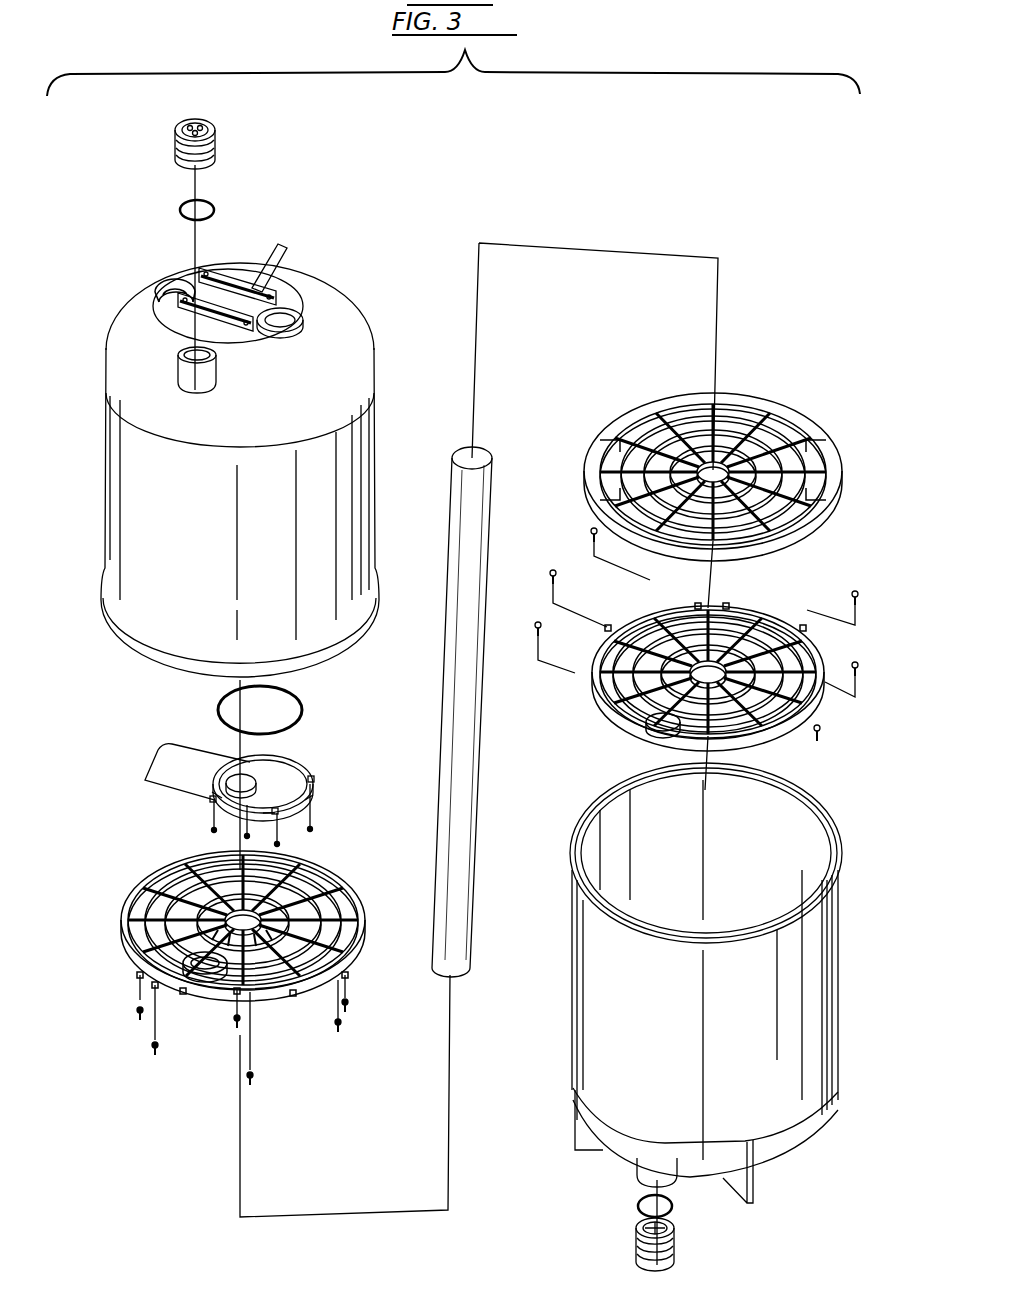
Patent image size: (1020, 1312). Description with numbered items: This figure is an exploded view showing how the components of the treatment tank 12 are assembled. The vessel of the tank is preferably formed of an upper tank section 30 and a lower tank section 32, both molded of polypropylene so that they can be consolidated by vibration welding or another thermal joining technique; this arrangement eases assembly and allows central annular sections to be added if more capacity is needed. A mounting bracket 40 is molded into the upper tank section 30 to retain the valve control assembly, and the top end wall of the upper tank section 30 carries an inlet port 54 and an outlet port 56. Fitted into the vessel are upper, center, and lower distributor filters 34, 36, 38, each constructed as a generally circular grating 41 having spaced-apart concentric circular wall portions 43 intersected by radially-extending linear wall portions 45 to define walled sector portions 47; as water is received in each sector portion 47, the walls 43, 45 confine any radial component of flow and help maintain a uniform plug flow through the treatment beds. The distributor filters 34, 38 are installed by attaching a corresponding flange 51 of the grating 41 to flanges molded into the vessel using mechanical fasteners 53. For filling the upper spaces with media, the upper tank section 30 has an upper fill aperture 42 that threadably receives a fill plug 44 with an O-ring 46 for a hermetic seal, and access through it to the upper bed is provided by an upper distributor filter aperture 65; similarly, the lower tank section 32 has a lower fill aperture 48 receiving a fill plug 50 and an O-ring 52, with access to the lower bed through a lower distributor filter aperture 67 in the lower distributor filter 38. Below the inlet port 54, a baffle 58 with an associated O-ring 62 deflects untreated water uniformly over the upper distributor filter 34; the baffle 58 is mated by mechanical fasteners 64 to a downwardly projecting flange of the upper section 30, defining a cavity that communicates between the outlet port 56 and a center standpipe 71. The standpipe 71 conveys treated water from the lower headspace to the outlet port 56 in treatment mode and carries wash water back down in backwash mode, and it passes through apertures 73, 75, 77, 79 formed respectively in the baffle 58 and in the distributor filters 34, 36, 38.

The treatment tank 12 is at (756, 241).
The upper tank section 30 is at (118, 485).
The lower tank section 32 is at (836, 960).
The upper distributor filter 34 is at (153, 876).
The center distributor filter 36 is at (805, 412).
The lower distributor filter 38 is at (778, 614).
The mounting bracket 40 is at (290, 275).
The grating 41 is at (310, 866).
The upper fill aperture 42 is at (180, 357).
The circular wall portion 43 is at (122, 936).
The fill plug 44 is at (216, 130).
The linear wall portion 45 is at (130, 909).
The O-ring 46 is at (212, 205).
The sector portion 47 is at (135, 962).
The lower fill aperture 48 is at (640, 1185).
The fill plug 50 is at (680, 1246).
The flange 51 is at (355, 931).
The O-ring 52 is at (673, 1206).
The mechanical fastener 53 is at (146, 1045).
The inlet port 54 is at (162, 283).
The outlet port 56 is at (300, 316).
The baffle 58 is at (313, 787).
The O-ring 62 is at (303, 711).
The mechanical fastener 64 is at (210, 833).
The upper distributor filter aperture 65 is at (205, 975).
The lower distributor filter aperture 67 is at (660, 731).
The center standpipe 71 is at (490, 490).
The aperture 73 is at (268, 759).
The aperture 75 is at (340, 893).
The aperture 77 is at (832, 450).
The aperture 79 is at (818, 655).